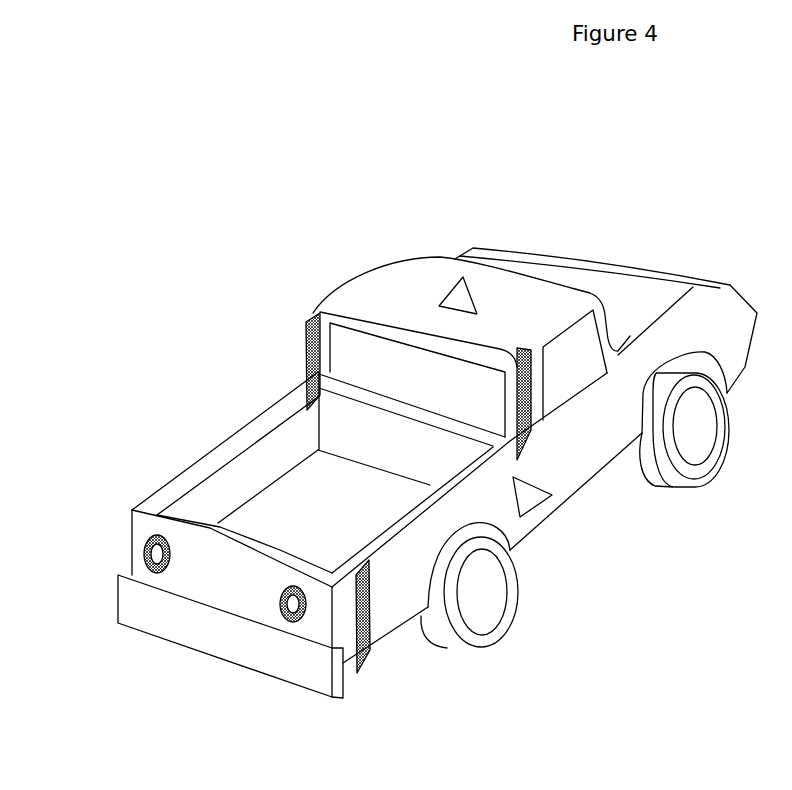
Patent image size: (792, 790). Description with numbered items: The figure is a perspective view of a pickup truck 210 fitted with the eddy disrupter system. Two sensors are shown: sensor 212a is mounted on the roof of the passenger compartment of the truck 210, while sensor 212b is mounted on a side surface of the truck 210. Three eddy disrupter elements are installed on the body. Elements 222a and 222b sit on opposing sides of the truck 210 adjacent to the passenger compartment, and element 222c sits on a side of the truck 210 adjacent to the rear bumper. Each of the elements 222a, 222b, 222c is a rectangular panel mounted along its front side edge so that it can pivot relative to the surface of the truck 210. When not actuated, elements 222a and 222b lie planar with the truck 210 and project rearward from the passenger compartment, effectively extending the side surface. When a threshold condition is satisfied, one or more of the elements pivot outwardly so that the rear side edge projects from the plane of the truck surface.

The pickup truck 210 is at (373, 274).
The sensor 212a is at (458, 296).
The sensor 212b is at (532, 498).
The eddy disrupter element 222a is at (308, 343).
The eddy disrupter element 222b is at (527, 413).
The eddy disrupter element 222c is at (360, 632).